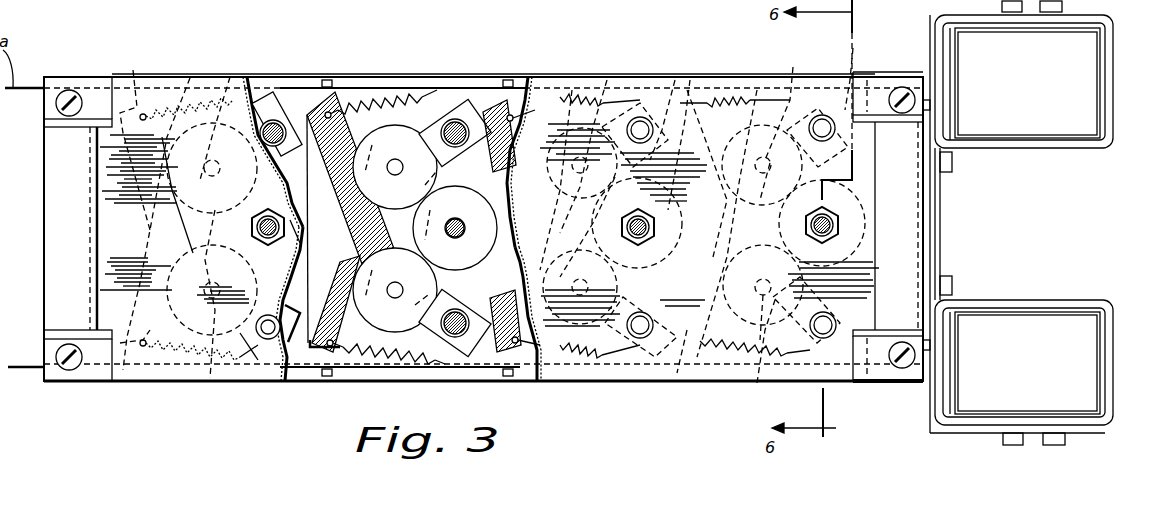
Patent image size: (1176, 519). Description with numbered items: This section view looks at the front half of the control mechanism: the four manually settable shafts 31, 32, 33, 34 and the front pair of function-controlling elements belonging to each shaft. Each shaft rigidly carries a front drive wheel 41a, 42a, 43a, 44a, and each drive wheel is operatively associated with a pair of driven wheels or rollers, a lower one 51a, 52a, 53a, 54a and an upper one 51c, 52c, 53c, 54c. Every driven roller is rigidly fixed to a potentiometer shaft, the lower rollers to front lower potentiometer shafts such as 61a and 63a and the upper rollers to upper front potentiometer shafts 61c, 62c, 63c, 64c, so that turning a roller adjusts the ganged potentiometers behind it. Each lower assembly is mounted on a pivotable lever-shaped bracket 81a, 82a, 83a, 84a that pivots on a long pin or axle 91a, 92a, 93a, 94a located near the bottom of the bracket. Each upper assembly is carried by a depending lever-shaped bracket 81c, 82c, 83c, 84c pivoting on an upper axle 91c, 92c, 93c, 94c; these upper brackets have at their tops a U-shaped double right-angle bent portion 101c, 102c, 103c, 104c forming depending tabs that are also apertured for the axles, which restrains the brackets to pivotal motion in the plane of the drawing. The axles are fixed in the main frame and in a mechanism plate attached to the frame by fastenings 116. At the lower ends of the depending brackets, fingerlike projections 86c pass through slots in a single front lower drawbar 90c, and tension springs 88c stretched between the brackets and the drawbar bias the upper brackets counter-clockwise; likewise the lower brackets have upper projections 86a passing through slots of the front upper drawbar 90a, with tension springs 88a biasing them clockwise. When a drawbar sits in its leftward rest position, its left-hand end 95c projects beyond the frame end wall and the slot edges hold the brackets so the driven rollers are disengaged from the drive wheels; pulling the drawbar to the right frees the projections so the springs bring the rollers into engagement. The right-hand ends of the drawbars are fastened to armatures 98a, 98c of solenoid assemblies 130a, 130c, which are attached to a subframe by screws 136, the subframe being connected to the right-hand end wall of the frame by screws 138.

The fastening of mechanism plate to main frame 116 is at (64, 92).
The projection 86a is at (138, 77).
The tension spring 88a is at (197, 76).
The upper front potentiometer shaft 61c is at (233, 76).
The front lower potentiometer shaft 61a is at (212, 381).
The upper front driven wheel 51c is at (207, 164).
The lower front driven wheel 51a is at (212, 277).
The lever-shaped bracket 81a is at (139, 181).
The depending lever-shaped bracket 81c is at (174, 280).
The lever-shaped bracket 82a is at (312, 174).
The depending lever-shaped bracket 82c is at (315, 300).
The upper axle pin 91c is at (285, 83).
The lower axle pin 91a is at (268, 339).
The shaft 31 is at (285, 215).
The front drive wheel 41a is at (298, 245).
The double right-angle bent portion 101c is at (306, 86).
The front upper drawbar 90a is at (358, 78).
The front lower drawbar 90c is at (317, 378).
The upper front driven wheel 52c is at (390, 160).
The upper front potentiometer shaft 62c is at (395, 160).
The shaft 32 is at (456, 216).
The lower front driven wheel 52a is at (388, 248).
The upper axle pin 92c is at (463, 108).
The lower axle pin 92a is at (457, 348).
The double right-angle bent portion 102c is at (478, 110).
The front drive wheel 42a is at (480, 285).
The lever-shaped bracket 83a is at (488, 175).
The depending lever-shaped bracket 83c is at (500, 296).
The upper front driven wheel 53c is at (590, 180).
The upper front driven wheel 54c is at (740, 151).
The lower front driven wheel 53a is at (591, 267).
The lower front driven wheel 54a is at (755, 283).
The lever-shaped bracket 84a is at (663, 176).
The depending lever-shaped bracket 84c is at (623, 301).
The front drive wheel 44a is at (833, 279).
The front drive wheel 43a is at (707, 223).
The shaft 33 is at (641, 219).
The shaft 34 is at (835, 212).
The upper front potentiometer shaft 63c is at (607, 78).
The upper front potentiometer shaft 64c is at (793, 67).
The front lower potentiometer shaft 63a is at (596, 368).
The double right-angle bent portion 103c is at (675, 78).
The double right-angle bent portion 104c is at (853, 48).
The upper axle pin 93c is at (641, 125).
The upper axle pin 94c is at (818, 117).
The lower axle pin 93a is at (640, 338).
The lower axle pin 94a is at (823, 335).
The fingerlike projection 86c is at (133, 372).
The tension spring 88c is at (185, 375).
The left-hand end of drawbar 95c is at (22, 368).
The armature 98a is at (911, 67).
The armature 98c is at (918, 387).
The solenoid assembly 130a is at (1083, 57).
The solenoid assembly 130c is at (1082, 347).
The screws 138 is at (952, 170).
The screws 136 is at (1013, 446).